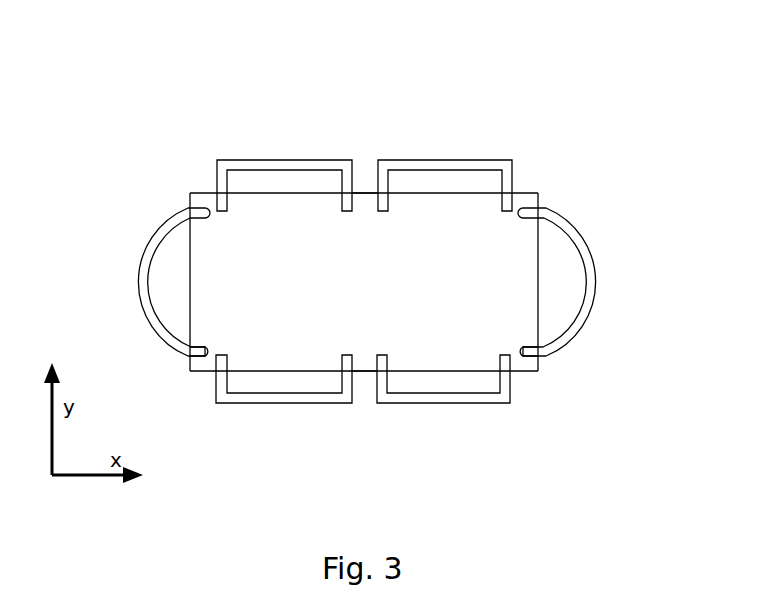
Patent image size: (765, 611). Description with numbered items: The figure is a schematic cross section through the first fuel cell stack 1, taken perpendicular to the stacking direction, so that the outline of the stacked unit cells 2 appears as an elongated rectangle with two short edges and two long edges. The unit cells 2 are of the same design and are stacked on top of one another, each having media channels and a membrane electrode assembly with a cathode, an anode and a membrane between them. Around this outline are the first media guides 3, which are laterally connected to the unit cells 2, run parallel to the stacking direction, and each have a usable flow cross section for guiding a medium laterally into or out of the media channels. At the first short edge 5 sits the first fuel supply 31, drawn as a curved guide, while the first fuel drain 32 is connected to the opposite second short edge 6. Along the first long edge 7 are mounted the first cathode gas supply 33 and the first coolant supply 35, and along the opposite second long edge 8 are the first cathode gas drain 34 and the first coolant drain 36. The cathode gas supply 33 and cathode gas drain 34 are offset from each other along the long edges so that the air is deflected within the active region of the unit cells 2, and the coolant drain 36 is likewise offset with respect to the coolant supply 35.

The first fuel cell stack 1 is at (528, 108).
The unit cells 2 is at (196, 203).
The first media guides 3 is at (356, 287).
The first short edge 5 is at (190, 358).
The second short edge 6 is at (537, 363).
The first long edge 7 is at (358, 193).
The second long edge 8 is at (365, 371).
The first fuel supply 31 is at (155, 247).
The first fuel drain 32 is at (562, 218).
The first cathode gas supply 33 is at (438, 162).
The first cathode gas drain 34 is at (273, 403).
The first coolant supply 35 is at (247, 162).
The first coolant drain 36 is at (472, 403).